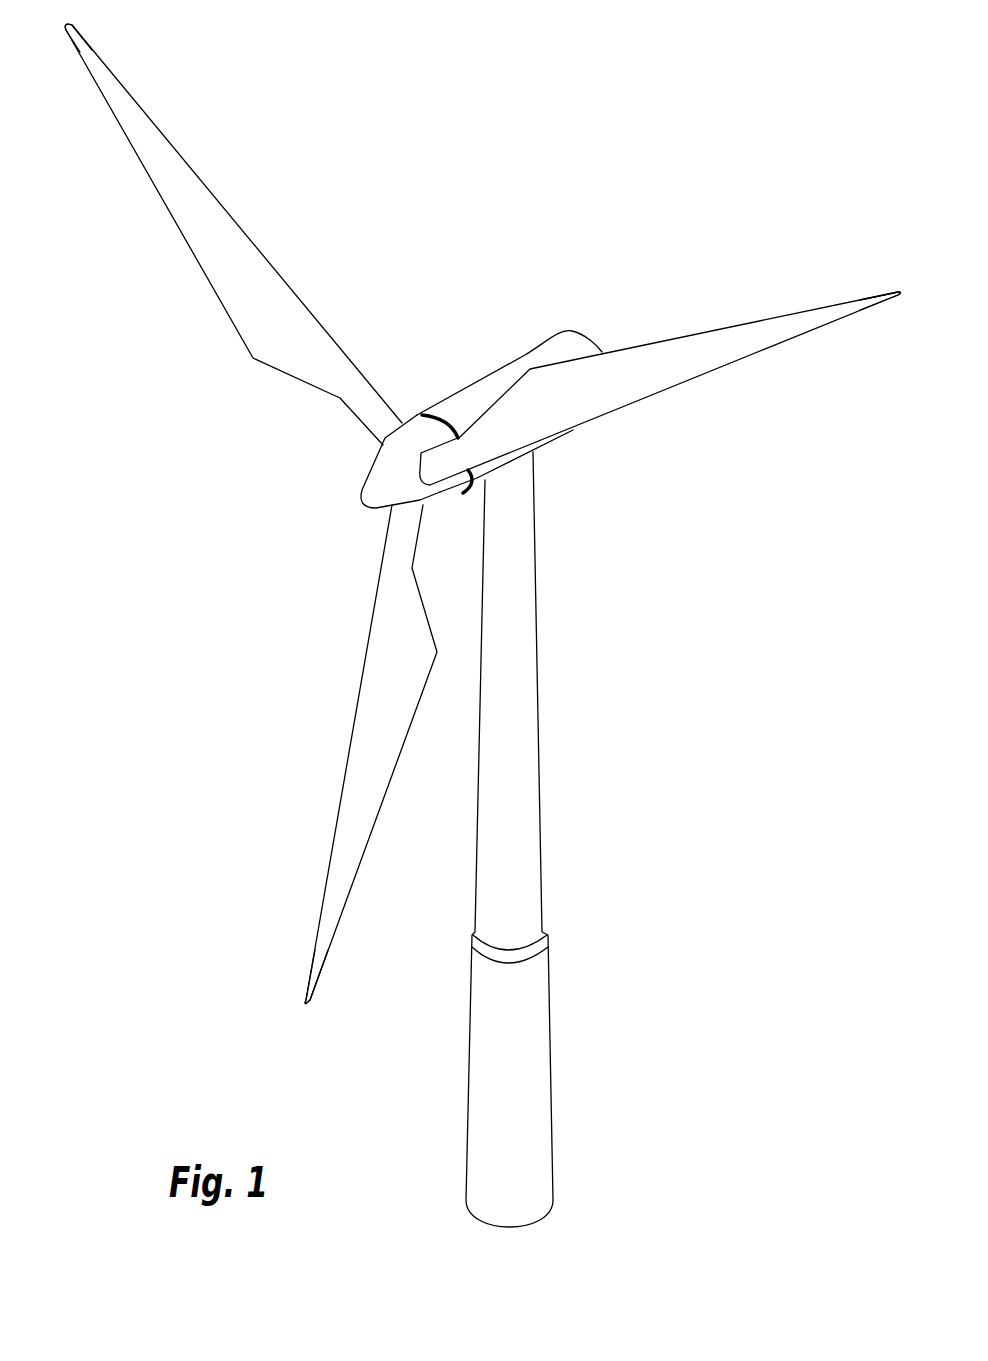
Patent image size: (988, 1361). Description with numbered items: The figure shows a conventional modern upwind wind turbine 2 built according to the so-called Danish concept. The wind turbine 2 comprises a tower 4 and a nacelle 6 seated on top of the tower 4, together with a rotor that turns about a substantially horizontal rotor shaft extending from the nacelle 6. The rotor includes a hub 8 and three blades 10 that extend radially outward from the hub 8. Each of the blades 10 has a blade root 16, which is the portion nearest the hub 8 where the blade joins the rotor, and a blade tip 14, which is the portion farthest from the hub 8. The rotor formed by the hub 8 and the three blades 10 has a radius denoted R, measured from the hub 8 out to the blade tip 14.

The wind turbine 2 is at (648, 775).
The tower 4 is at (527, 697).
The nacelle 6 is at (475, 395).
The hub 8 is at (380, 480).
The blades 10 is at (267, 330).
The blade tip 14 is at (108, 83).
The blade root 16 is at (380, 447).